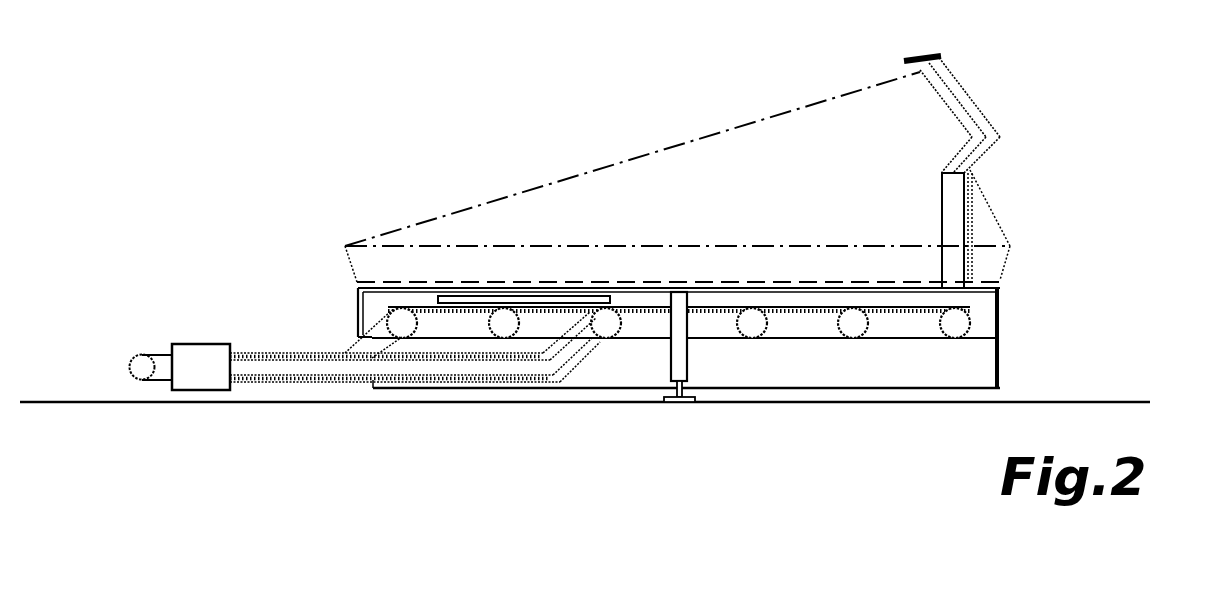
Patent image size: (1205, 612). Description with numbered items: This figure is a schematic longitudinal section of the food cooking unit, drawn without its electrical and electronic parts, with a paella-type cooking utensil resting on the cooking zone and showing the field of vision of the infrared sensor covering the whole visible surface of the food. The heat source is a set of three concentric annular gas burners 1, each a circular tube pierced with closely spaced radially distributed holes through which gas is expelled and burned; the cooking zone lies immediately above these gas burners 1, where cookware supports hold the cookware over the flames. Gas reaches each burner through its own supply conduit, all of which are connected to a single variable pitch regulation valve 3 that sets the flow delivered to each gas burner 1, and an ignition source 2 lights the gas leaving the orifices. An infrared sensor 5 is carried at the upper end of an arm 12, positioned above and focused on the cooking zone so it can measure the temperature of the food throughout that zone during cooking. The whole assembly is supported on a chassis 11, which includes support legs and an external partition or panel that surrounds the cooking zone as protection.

The gas burner 1 is at (757, 337).
The ignition source 2 is at (552, 296).
The variable pitch regulation valve 3 is at (365, 350).
The infrared sensor 5 is at (963, 62).
The chassis 11 is at (1000, 327).
The arm 12 is at (987, 106).